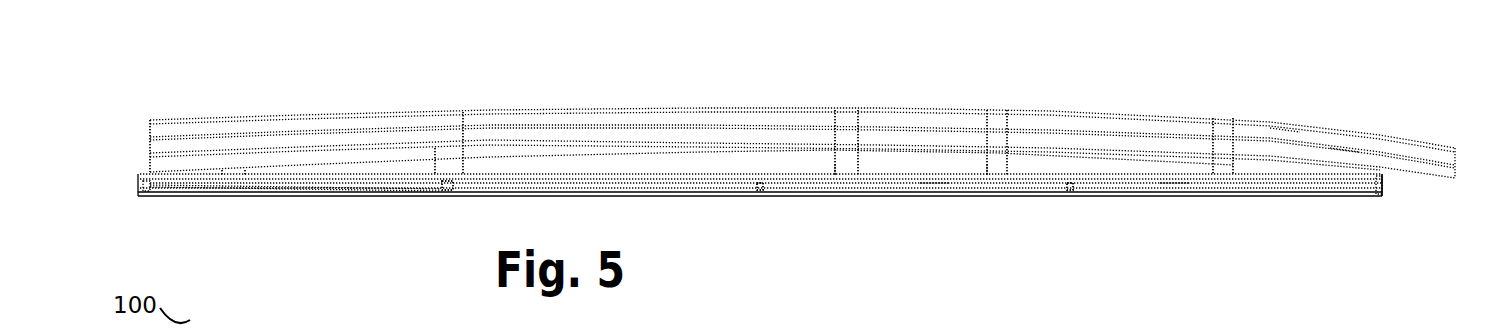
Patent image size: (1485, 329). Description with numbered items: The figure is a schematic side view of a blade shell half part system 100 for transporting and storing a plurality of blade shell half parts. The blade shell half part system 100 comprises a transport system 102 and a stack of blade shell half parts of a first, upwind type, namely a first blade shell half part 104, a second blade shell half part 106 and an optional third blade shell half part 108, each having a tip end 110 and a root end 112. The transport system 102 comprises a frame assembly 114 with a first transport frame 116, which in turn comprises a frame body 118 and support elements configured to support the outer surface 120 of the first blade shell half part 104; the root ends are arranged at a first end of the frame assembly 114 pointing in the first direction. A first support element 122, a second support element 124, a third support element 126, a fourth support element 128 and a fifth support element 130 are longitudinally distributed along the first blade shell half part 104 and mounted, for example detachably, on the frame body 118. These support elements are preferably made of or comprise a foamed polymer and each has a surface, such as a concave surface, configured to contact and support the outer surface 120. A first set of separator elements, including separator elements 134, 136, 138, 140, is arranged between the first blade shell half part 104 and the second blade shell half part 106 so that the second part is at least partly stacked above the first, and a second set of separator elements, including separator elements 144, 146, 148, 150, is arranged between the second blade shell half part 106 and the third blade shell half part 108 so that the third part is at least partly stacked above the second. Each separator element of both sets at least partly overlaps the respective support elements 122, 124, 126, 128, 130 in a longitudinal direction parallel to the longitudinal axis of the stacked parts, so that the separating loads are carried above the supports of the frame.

The blade shell half part system 100 is at (240, 96).
The transport system 102 is at (1220, 186).
The first blade shell half part 104 is at (1420, 173).
The second blade shell half part 106 is at (1343, 148).
The third blade shell half part 108 is at (1287, 130).
The tip end 110 is at (1453, 158).
The root end 112 is at (152, 152).
The frame assembly 114 is at (1063, 183).
The first transport frame 116 is at (750, 187).
The frame body 118 is at (935, 187).
The outer surface 120 is at (287, 183).
The first support element 122 is at (237, 183).
The second support element 124 is at (435, 183).
The third support element 126 is at (838, 184).
The fourth support element 128 is at (982, 183).
The fifth support element 130 is at (1177, 183).
The separator element 134 is at (443, 138).
The separator element 136 is at (843, 138).
The separator element 138 is at (1002, 138).
The separator element 140 is at (1225, 152).
The separator element 144 is at (450, 122).
The separator element 146 is at (840, 123).
The separator element 148 is at (1002, 122).
The separator element 150 is at (1223, 127).